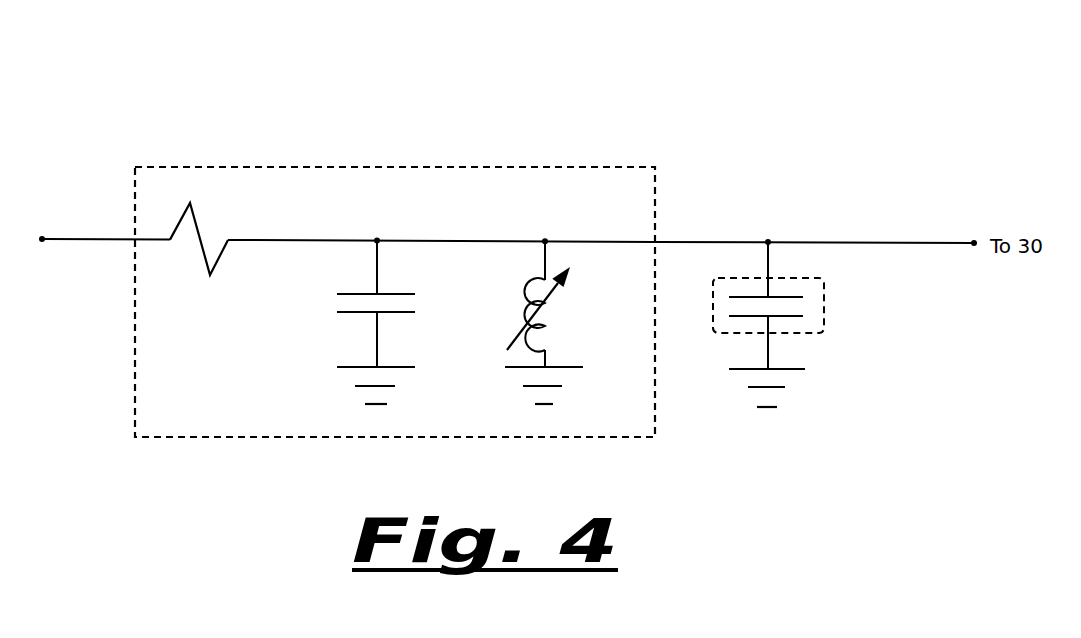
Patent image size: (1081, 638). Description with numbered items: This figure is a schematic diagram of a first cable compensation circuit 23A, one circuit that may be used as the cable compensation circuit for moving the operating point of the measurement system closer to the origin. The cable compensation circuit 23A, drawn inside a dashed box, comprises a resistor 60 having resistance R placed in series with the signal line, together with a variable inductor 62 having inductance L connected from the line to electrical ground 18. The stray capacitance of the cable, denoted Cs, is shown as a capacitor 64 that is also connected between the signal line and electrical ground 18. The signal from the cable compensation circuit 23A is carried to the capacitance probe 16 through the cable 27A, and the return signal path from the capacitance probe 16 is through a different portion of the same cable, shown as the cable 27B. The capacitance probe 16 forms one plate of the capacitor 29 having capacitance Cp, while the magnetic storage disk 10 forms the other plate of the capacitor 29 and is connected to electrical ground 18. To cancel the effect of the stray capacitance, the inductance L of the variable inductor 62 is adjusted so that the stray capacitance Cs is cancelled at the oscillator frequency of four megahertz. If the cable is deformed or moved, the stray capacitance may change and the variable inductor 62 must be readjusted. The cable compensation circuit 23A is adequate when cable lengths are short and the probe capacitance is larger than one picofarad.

The cable compensation circuit 23A is at (196, 146).
The cable 27A is at (330, 238).
The cable 27B is at (832, 242).
The resistor 60 is at (202, 252).
The capacitor 64 is at (355, 294).
The variable inductor 62 is at (526, 281).
The capacitor 29 is at (791, 258).
The capacitance probe 16 is at (803, 297).
The magnetic storage disk 10 is at (795, 316).
The electrical ground 18 is at (362, 369).